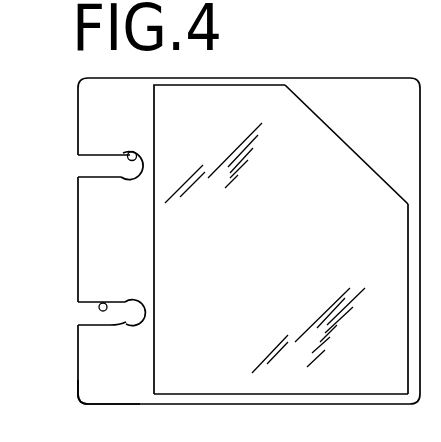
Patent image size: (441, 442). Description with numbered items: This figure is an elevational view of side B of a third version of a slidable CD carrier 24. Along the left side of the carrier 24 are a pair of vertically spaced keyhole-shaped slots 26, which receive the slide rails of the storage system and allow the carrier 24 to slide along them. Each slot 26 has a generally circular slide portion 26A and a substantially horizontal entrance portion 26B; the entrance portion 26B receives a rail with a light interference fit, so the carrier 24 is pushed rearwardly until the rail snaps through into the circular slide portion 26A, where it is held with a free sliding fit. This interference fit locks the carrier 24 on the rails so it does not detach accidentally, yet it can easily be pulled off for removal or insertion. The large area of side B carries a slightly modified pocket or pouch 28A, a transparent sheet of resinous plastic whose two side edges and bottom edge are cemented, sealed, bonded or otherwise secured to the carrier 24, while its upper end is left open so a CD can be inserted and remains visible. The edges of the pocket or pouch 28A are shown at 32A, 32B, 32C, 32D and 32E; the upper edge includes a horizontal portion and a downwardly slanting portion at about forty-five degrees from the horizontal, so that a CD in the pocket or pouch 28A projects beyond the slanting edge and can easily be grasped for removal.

The CD carrier 24 is at (212, 77).
The keyhole-shaped slot 26 is at (90, 163).
The circular slide portion 26A is at (127, 151).
The entrance portion 26B is at (110, 170).
The pocket or pouch 28A is at (222, 364).
The bottom left edge of plate 32A is at (132, 408).
The right edge of plate 32B is at (388, 370).
The bottom edge of plate 32C is at (306, 380).
The top left edge of plate 32D is at (168, 97).
The chamfered edge of plate 32E is at (279, 115).